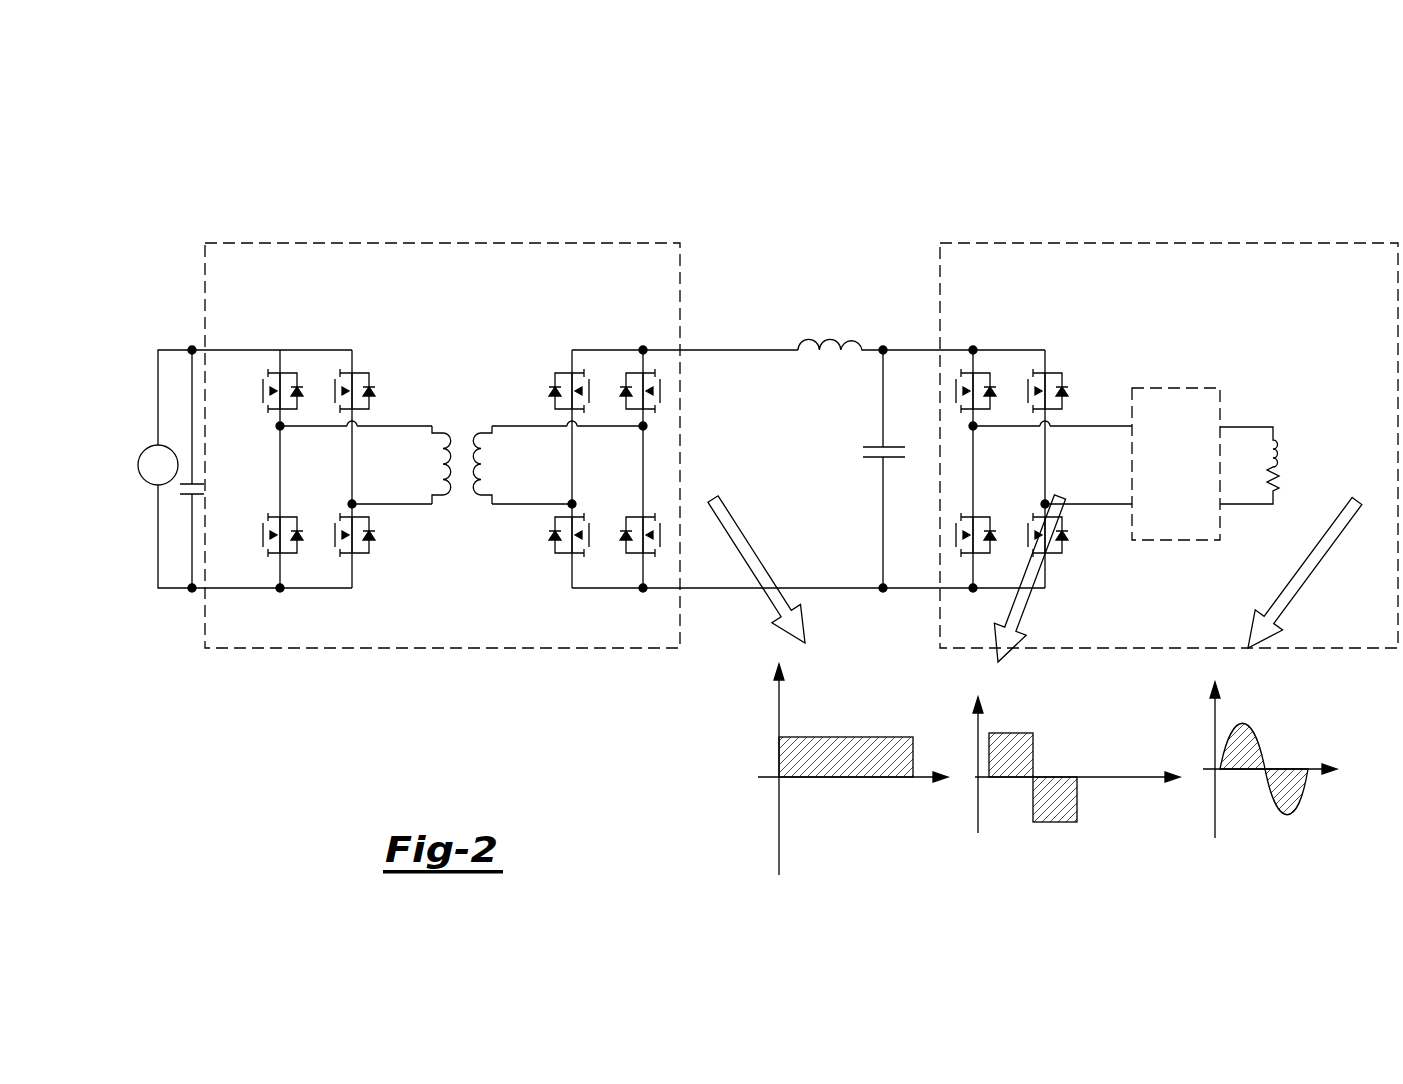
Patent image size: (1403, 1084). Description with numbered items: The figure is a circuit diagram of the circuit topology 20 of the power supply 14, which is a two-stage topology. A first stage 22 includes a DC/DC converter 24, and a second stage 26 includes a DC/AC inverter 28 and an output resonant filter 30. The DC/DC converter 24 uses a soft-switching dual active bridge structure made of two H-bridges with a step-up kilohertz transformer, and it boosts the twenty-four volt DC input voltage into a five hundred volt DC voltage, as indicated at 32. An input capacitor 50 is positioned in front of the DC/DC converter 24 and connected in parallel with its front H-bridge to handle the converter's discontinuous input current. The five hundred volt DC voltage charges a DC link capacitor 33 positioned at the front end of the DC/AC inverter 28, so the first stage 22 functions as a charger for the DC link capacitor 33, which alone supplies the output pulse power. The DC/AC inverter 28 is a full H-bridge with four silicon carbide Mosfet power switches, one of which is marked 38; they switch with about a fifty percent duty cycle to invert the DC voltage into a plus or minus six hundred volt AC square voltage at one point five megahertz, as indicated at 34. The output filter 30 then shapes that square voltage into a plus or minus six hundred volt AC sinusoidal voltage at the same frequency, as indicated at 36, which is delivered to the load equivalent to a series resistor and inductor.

The power supply 14 is at (1200, 168).
The circuit topology 20 is at (780, 306).
The first stage 22 is at (567, 243).
The DC/DC converter 24 is at (418, 380).
The second stage 26 is at (1288, 242).
The DC/AC inverter 28 is at (1090, 359).
The output filter 30 is at (1202, 387).
The 500 V DC voltage 32 is at (765, 603).
The DC link capacitor 33 is at (873, 447).
The ±600 V AC square voltage 34 is at (1030, 614).
The ±600 V AC sinusoidal voltage 36 is at (1300, 604).
The power switch 38 is at (958, 390).
The input capacitor 50 is at (192, 541).